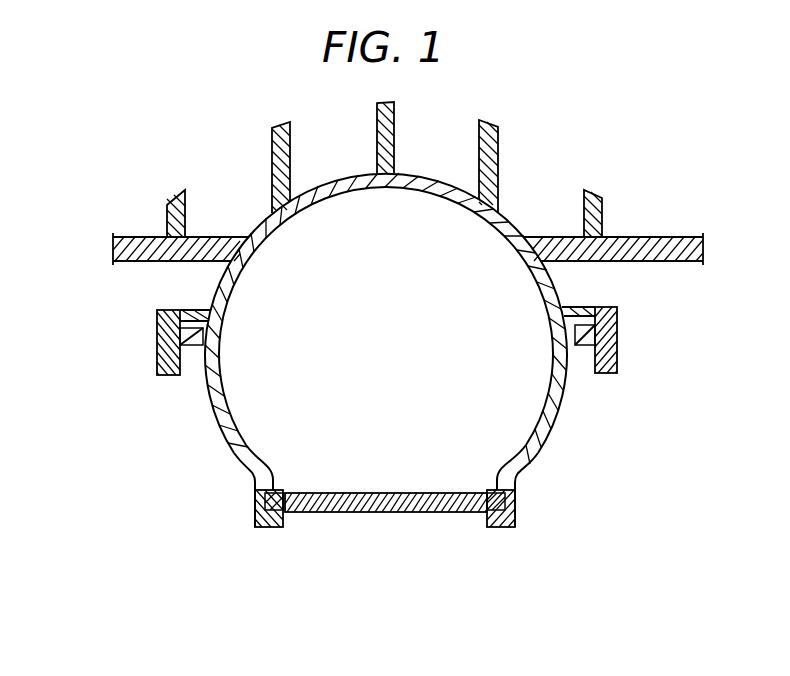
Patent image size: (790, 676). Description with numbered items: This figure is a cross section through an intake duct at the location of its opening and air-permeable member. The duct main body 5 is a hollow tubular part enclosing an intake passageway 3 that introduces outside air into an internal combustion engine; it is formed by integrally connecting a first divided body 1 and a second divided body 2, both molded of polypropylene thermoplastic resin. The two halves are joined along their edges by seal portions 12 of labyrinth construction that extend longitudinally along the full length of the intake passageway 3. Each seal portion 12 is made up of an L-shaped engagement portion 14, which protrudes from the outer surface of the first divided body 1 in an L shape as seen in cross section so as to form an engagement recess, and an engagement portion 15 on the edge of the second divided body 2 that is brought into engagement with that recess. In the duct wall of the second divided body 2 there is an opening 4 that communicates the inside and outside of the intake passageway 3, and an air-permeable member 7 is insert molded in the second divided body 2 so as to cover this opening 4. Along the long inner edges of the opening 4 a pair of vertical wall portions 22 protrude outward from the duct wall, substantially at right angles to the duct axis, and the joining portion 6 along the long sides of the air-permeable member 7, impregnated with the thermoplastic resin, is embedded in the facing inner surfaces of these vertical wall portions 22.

The first divided body 1 is at (517, 214).
The second divided body 2 is at (543, 420).
The intake passageway 3 is at (282, 253).
The opening 4 is at (335, 525).
The duct main body 5 is at (614, 294).
The joining portion 6 is at (488, 518).
The air-permeable member 7 is at (422, 510).
The seal portion 12 is at (383, 367).
The L-shaped engagement portion 14 is at (163, 342).
The engagement portion 15 is at (192, 352).
The vertical wall portion 22 is at (268, 516).